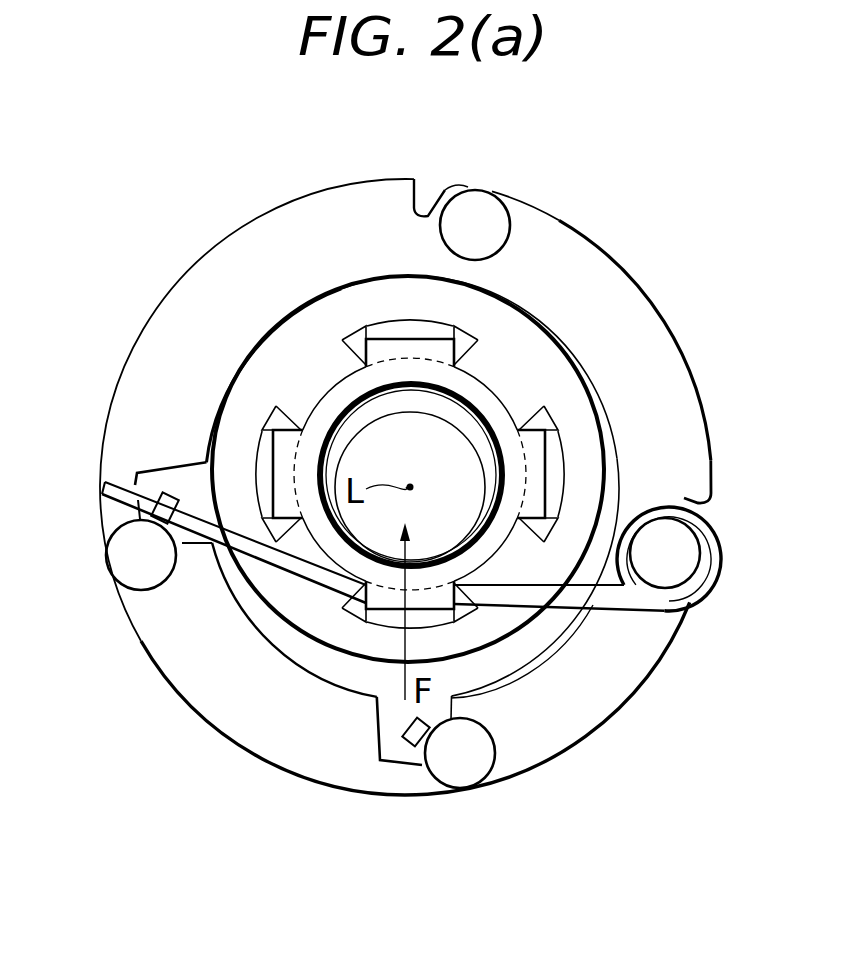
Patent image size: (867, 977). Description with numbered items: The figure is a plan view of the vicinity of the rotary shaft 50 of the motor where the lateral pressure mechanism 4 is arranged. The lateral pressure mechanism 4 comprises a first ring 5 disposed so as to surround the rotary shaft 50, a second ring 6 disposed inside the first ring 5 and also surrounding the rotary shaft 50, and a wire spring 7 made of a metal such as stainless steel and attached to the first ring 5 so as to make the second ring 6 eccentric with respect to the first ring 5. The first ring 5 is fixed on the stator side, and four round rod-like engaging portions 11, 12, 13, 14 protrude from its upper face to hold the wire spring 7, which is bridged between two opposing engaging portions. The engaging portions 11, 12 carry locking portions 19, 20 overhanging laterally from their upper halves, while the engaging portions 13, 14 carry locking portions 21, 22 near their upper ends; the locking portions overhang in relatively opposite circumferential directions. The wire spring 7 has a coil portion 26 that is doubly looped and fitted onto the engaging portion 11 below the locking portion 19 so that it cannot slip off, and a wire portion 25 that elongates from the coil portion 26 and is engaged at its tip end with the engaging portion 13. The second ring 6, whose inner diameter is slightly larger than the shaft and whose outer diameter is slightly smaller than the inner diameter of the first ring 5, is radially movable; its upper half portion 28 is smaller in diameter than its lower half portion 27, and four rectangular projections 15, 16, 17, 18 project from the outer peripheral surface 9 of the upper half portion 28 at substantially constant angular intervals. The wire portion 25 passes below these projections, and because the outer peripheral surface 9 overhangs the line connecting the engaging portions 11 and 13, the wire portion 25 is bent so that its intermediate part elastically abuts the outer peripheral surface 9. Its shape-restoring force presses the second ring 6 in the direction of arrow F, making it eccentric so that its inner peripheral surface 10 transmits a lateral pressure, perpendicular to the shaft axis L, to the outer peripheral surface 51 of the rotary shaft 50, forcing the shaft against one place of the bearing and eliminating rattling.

The lateral pressure mechanism 4 is at (604, 134).
The first ring 5 is at (575, 248).
The second ring 6 is at (585, 445).
The wire spring 7 is at (446, 596).
The outer peripheral surface 9 is at (330, 578).
The inner peripheral surface 10 is at (270, 471).
The engaging portion 11 is at (667, 567).
The engaging portion 12 is at (497, 217).
The engaging portion 13 is at (127, 562).
The engaging portion 14 is at (467, 762).
The projection 15 is at (572, 445).
The projection 16 is at (410, 323).
The projection 17 is at (211, 467).
The projection 18 is at (389, 657).
The locking portion 19 is at (692, 522).
The locking portion 20 is at (445, 192).
The locking portion 21 is at (130, 505).
The locking portion 22 is at (425, 745).
The wire portion 25 is at (517, 595).
The coil portion 26 is at (708, 578).
The lower half portion 27 is at (287, 365).
The upper half portion 28 is at (410, 444).
The rotary shaft 50 is at (473, 488).
The outer peripheral surface 51 is at (457, 428).